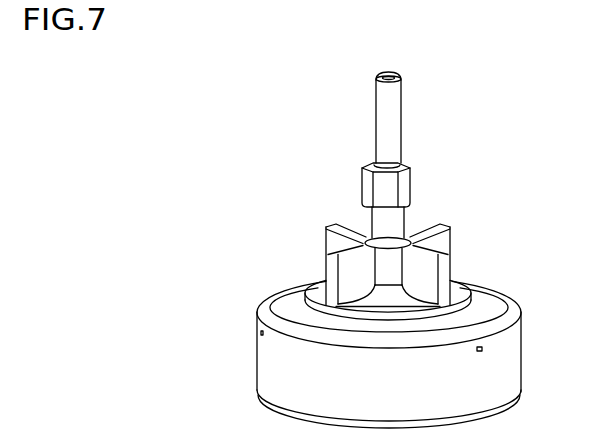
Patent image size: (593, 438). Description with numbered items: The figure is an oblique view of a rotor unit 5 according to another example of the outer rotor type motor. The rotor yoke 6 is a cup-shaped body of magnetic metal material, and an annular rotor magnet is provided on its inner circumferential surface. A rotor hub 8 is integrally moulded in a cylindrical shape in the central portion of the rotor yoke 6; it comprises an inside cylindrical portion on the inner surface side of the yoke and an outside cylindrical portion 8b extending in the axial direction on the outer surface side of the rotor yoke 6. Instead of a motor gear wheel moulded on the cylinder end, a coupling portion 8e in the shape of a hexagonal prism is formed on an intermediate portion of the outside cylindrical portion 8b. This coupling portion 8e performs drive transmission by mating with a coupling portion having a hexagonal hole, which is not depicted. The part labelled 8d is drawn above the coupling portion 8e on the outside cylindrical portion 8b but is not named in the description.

The rotor unit 5 is at (252, 147).
The rotor yoke 6 is at (502, 288).
The rotor hub 8 is at (470, 259).
The outside cylindrical portion 8b is at (380, 223).
The shaft 8d is at (382, 165).
The coupling portion 8e is at (412, 180).